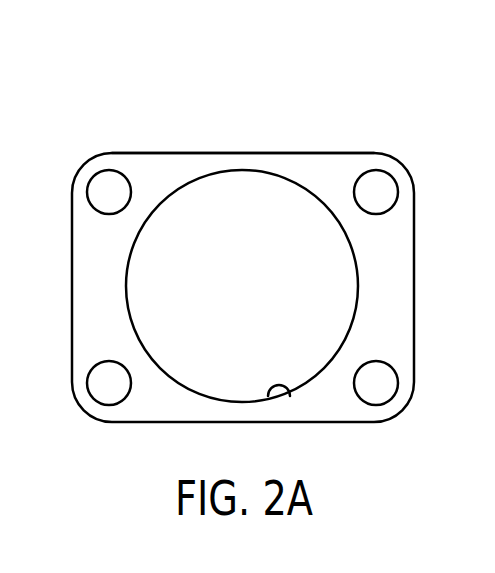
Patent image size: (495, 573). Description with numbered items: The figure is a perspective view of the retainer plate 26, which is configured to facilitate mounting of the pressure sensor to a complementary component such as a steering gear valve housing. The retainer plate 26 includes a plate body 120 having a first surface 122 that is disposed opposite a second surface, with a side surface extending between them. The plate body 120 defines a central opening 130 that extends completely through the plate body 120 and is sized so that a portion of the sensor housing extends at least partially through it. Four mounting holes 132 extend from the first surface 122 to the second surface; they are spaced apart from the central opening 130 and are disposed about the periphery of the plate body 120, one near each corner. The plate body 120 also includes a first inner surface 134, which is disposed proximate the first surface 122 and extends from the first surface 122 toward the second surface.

The retainer plate 26 is at (136, 97).
The plate body 120 is at (243, 150).
The first surface 122 is at (338, 163).
The central opening 130 is at (205, 392).
The mounting holes 132 is at (90, 181).
The first inner surface 134 is at (273, 386).